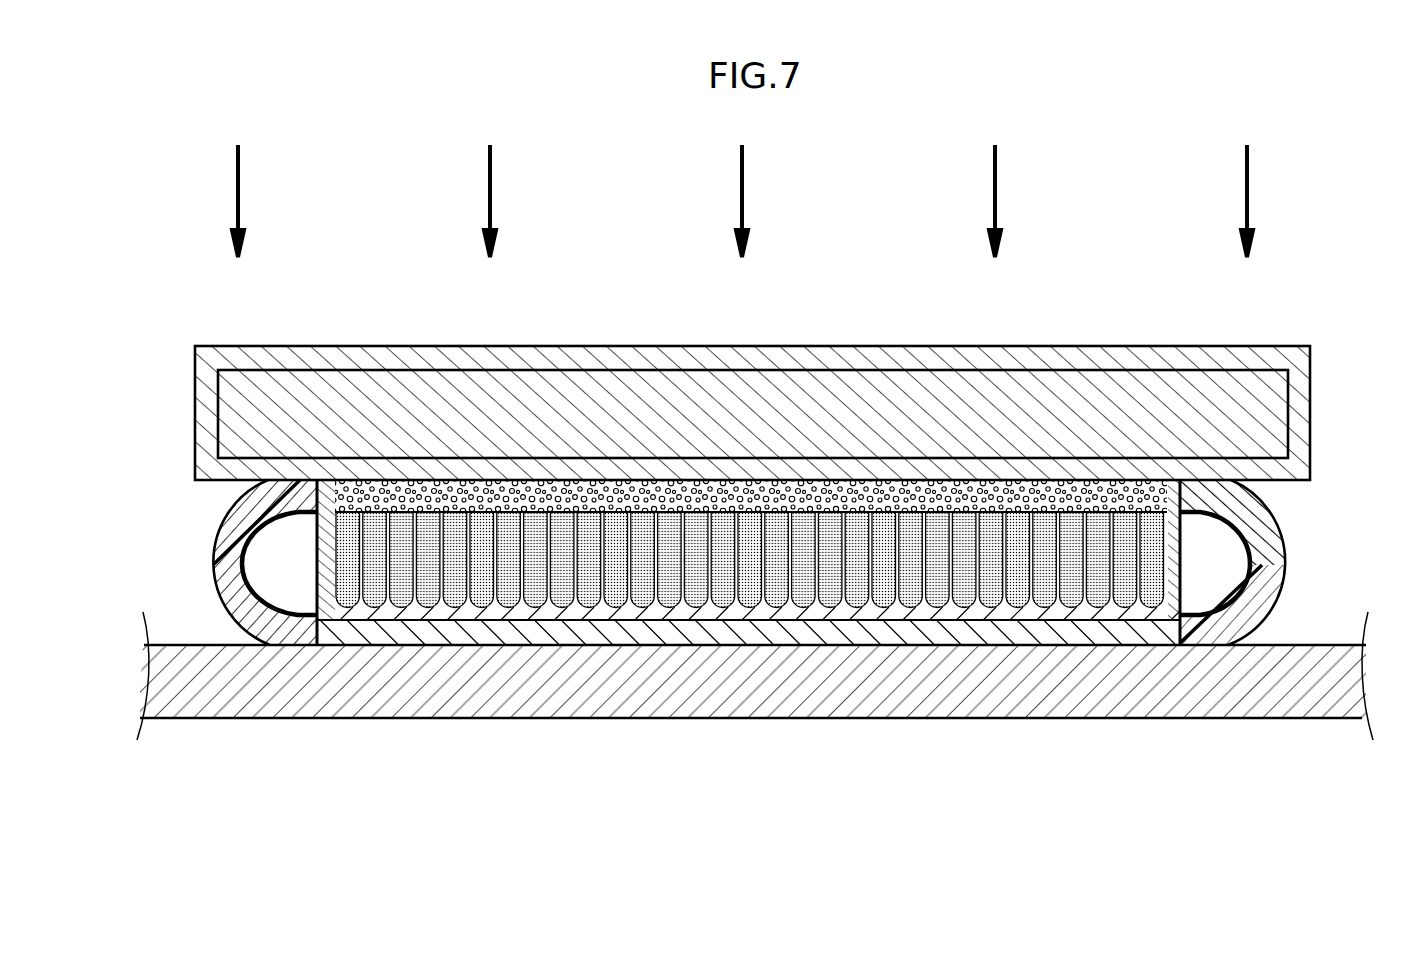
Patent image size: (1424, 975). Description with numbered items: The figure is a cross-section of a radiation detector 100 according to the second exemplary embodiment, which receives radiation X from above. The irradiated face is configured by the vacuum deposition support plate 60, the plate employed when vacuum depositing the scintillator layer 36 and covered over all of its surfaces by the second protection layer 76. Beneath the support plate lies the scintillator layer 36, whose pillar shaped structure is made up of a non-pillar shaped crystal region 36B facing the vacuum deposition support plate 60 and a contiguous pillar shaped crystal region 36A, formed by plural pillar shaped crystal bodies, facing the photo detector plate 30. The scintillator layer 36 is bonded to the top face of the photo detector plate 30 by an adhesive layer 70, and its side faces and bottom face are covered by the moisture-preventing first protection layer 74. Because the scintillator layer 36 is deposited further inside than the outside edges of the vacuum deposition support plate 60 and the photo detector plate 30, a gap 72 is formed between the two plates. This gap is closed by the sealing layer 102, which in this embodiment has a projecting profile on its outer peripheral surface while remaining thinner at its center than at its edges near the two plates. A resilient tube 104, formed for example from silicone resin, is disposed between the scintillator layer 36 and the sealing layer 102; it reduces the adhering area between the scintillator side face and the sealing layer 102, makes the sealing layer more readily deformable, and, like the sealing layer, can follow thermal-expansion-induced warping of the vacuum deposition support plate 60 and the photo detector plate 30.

The radiation detector 100 is at (1335, 247).
The radiation X is at (1249, 180).
The vacuum deposition support plate 60 is at (240, 408).
The second protection layer 76 is at (200, 457).
The scintillator layer 36 is at (133, 500).
The pillar shaped crystal region 36A is at (345, 555).
The non-pillar shaped crystal region 36B is at (265, 503).
The adhesive layer 70 is at (320, 622).
The photo detector plate 30 is at (173, 680).
The gap 72 is at (1292, 510).
The first protection layer 74 is at (1215, 563).
The tube 104 is at (1265, 577).
The sealing layer 102 is at (1262, 612).